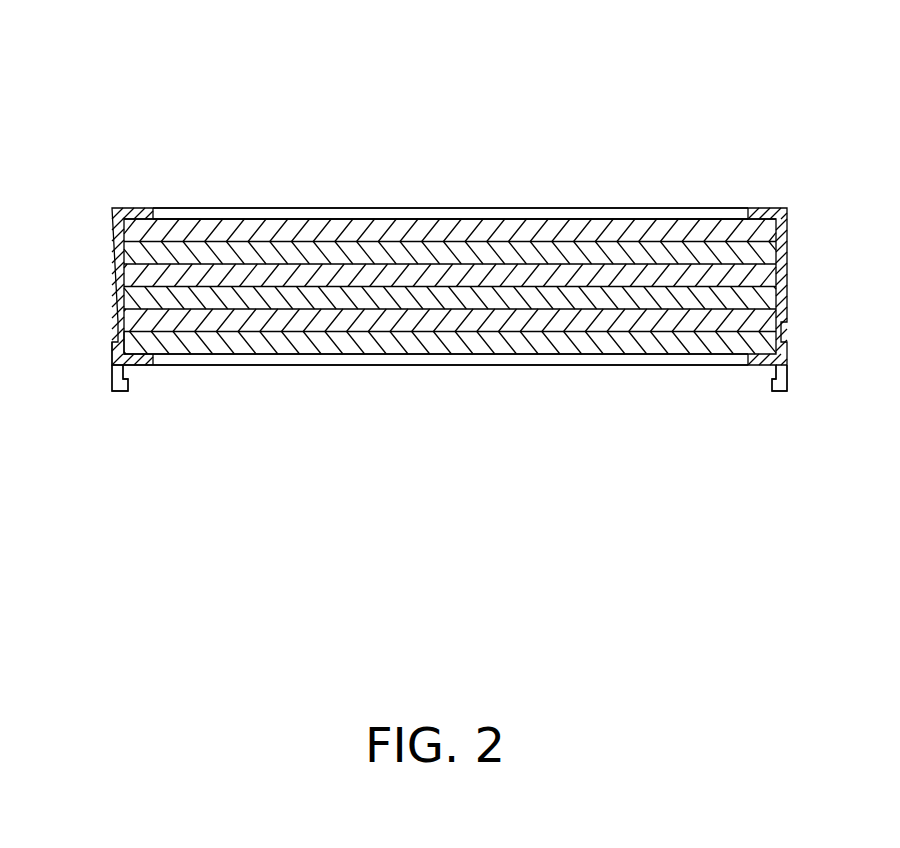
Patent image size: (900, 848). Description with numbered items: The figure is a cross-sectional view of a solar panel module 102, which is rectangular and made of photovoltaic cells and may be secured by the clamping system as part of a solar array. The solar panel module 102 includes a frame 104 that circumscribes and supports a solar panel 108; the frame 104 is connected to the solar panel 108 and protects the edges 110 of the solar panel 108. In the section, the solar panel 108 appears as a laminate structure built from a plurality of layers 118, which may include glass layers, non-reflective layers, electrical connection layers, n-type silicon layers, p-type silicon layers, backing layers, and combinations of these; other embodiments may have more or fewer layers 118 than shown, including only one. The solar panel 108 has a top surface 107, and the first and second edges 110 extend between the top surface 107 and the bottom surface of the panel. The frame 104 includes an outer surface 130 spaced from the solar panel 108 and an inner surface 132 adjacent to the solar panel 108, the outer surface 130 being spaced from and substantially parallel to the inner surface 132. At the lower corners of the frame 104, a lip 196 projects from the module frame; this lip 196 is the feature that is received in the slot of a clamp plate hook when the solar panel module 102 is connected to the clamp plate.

The solar panel module 102 is at (272, 108).
The frame 104 is at (125, 208).
The top surface 107 is at (493, 218).
The solar panel 108 is at (660, 178).
The edges 110 is at (453, 286).
The layers 118 is at (137, 318).
The outer surface 130 is at (112, 354).
The inner surface 132 is at (125, 340).
The lip 196 is at (112, 391).